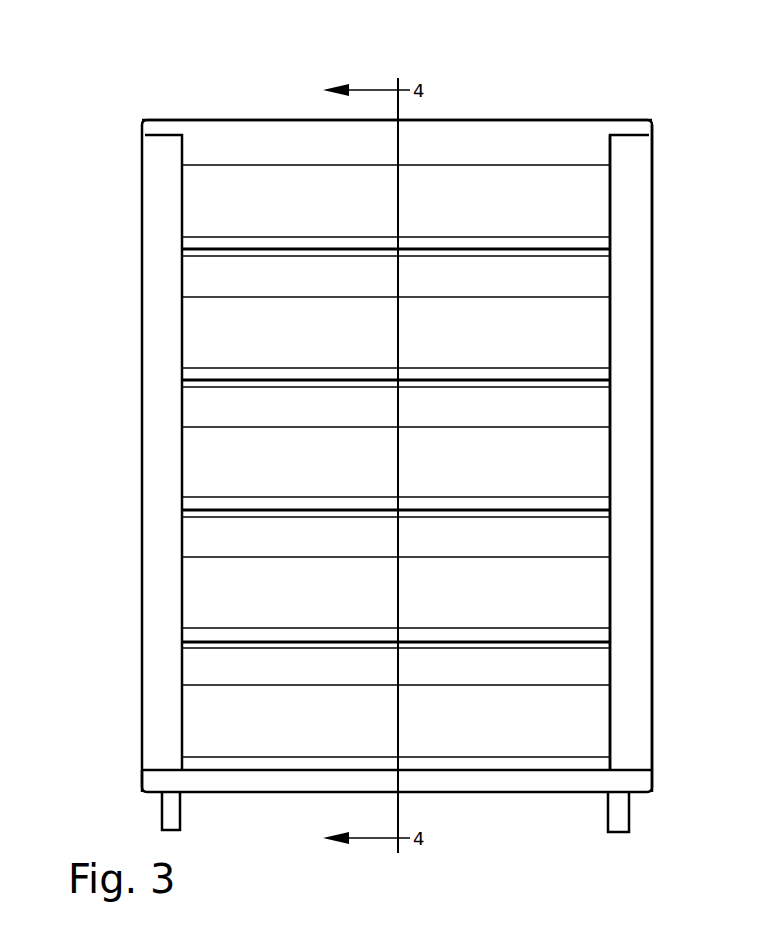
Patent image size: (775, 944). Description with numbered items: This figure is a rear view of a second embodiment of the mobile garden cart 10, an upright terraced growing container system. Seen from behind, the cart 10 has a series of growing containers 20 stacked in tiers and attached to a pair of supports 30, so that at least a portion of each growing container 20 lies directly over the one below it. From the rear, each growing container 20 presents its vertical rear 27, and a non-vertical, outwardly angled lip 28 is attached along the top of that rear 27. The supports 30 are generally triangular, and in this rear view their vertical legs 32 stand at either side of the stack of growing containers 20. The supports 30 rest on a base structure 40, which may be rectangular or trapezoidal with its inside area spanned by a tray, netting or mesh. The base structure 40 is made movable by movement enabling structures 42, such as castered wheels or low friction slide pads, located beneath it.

The mobile garden cart 10 is at (510, 104).
The growing container 20 is at (562, 135).
The vertical rear 27 is at (213, 192).
The lip 28 is at (267, 140).
The support 30 is at (632, 417).
The vertical leg 32 is at (632, 208).
The base structure 40 is at (638, 757).
The movement enabling structure 42 is at (618, 813).